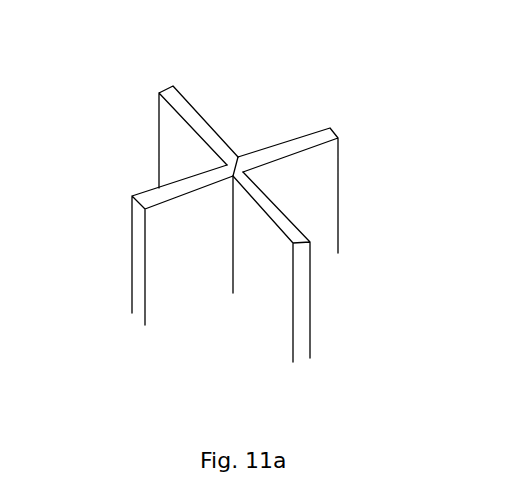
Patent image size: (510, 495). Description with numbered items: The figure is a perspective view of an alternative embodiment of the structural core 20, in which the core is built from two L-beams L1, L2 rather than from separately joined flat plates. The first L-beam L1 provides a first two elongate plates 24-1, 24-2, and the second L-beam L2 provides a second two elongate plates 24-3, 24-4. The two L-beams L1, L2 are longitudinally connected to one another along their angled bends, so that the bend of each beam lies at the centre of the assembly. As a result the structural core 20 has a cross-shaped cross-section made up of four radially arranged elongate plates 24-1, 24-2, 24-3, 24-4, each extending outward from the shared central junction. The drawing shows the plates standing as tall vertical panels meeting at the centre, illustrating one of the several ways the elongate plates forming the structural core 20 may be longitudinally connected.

The structural core 20 is at (213, 192).
The first elongate plate 24-1 is at (183, 143).
The second elongate plate 24-2 is at (178, 260).
The third elongate plate 24-3 is at (283, 177).
The fourth elongate plate 24-4 is at (268, 279).
The first L-beam L1 is at (175, 163).
The second L-beam L2 is at (308, 192).